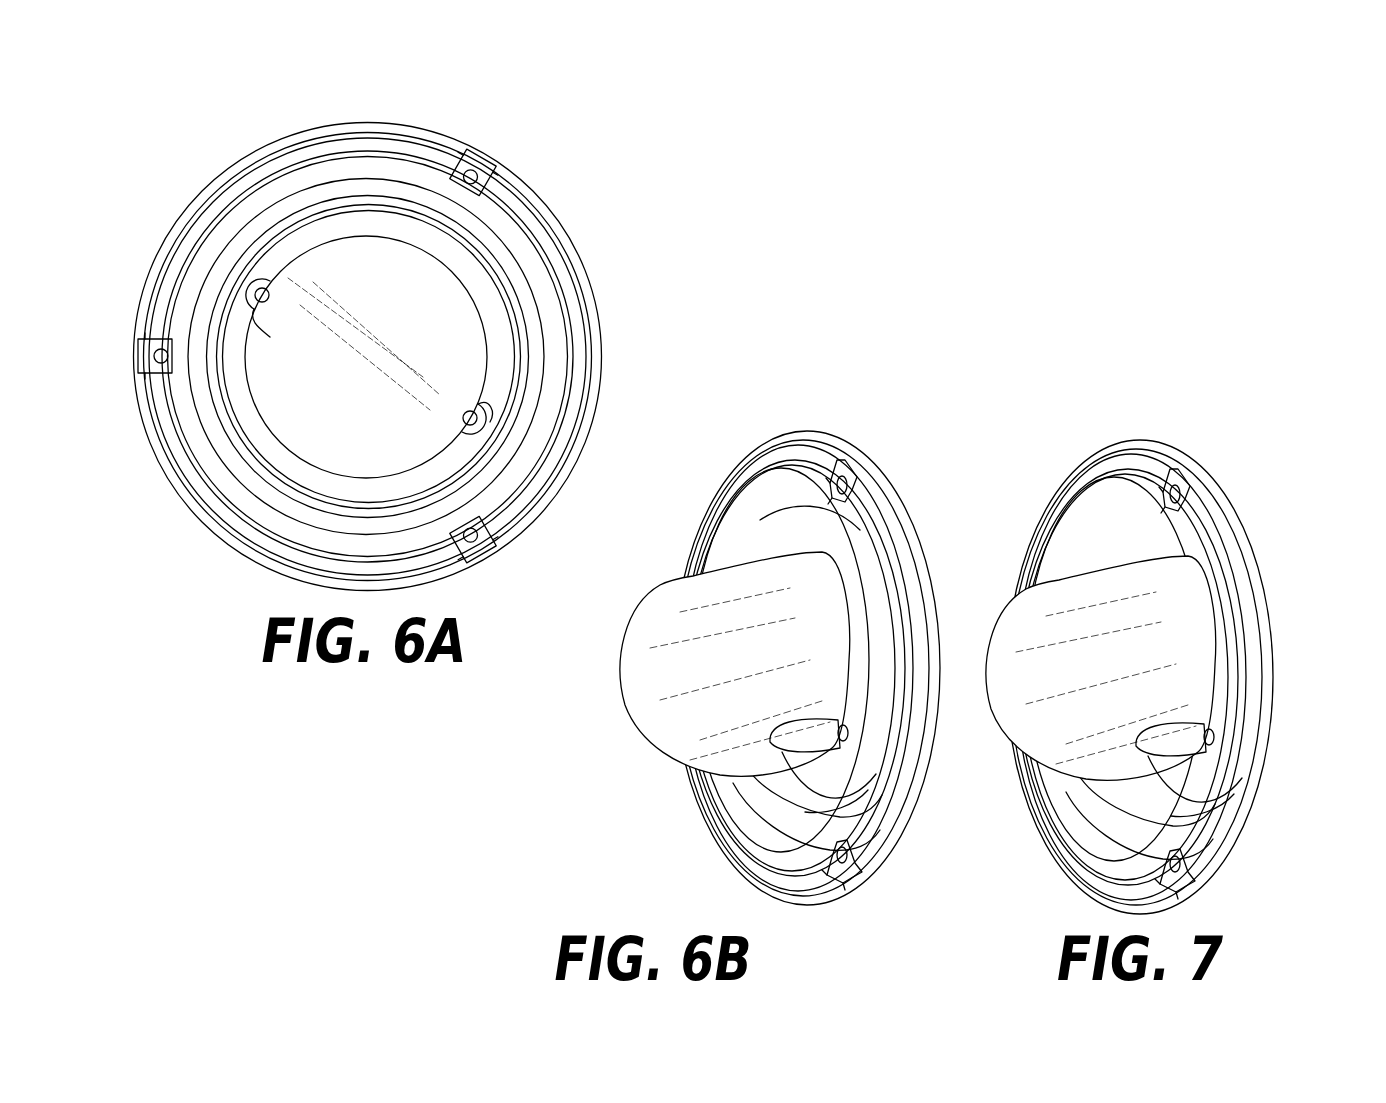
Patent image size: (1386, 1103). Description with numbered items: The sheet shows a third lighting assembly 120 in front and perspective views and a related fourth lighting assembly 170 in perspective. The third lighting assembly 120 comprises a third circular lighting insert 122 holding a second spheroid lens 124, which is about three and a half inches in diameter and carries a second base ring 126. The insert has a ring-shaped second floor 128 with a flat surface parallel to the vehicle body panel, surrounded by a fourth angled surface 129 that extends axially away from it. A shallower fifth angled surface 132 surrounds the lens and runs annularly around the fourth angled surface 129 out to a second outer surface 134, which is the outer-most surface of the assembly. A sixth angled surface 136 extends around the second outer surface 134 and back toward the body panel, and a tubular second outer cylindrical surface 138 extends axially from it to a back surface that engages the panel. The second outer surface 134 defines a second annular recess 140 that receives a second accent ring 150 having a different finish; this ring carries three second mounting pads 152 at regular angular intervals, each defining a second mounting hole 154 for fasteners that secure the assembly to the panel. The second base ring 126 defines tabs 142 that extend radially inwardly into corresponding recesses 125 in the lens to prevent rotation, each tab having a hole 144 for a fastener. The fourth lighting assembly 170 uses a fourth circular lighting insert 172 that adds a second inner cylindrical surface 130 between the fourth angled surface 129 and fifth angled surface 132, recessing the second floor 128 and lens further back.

In FIG. 6A, the third lighting assembly 120 is at (160, 170).
In FIG. 6B, the third lighting assembly 120 is at (747, 418).
In FIG. 6A, the third circular lighting insert 122 is at (530, 176).
In FIG. 6B, the third circular lighting insert 122 is at (873, 452).
In FIG. 6A, the second spheroid lens 124 is at (410, 300).
In FIG. 6B, the second spheroid lens 124 is at (682, 602).
In FIG. 7, the second spheroid lens 124 is at (1040, 645).
In FIG. 6A, the recesses 125 is at (480, 435).
In FIG. 6B, the recesses 125 is at (745, 762).
In FIG. 7, the recesses 125 is at (1115, 740).
In FIG. 6A, the second base ring 126 is at (490, 302).
In FIG. 6B, the second base ring 126 is at (816, 552).
In FIG. 6A, the second floor 128 is at (237, 289).
In FIG. 6B, the second floor 128 is at (862, 830).
In FIG. 6A, the fourth angled surface 129 is at (216, 310).
In FIG. 6B, the fourth angled surface 129 is at (790, 838).
In FIG. 7, the second inner cylindrical surface 130 is at (1133, 828).
In FIG. 6A, the fifth angled surface 132 is at (557, 326).
In FIG. 6B, the fifth angled surface 132 is at (727, 542).
In FIG. 7, the fifth angled surface 132 is at (1066, 537).
In FIG. 6A, the second outer surface 134 is at (592, 340).
In FIG. 6A, the sixth angled surface 136 is at (592, 396).
In FIG. 7, the sixth angled surface 136 is at (1168, 445).
In FIG. 6B, the second outer cylindrical surface 138 is at (918, 792).
In FIG. 7, the second outer cylindrical surface 138 is at (1228, 506).
In FIG. 6A, the second annular recess 140 is at (258, 172).
In FIG. 6B, the second annular recess 140 is at (728, 484).
In FIG. 7, the second annular recess 140 is at (1085, 472).
In FIG. 6A, the tabs 142 is at (262, 302).
In FIG. 6B, the tabs 142 is at (850, 733).
In FIG. 6A, the hole 144 is at (266, 288).
In FIG. 6B, the hole 144 is at (852, 742).
In FIG. 7, the hole 144 is at (1218, 741).
In FIG. 6A, the second accent ring 150 is at (432, 152).
In FIG. 6B, the second accent ring 150 is at (784, 448).
In FIG. 6A, the second mounting pads 152 is at (476, 168).
In FIG. 6B, the second mounting pads 152 is at (858, 876).
In FIG. 7, the second mounting pads 152 is at (1185, 875).
In FIG. 6A, the second mounting holes 154 is at (482, 163).
In FIG. 6B, the second mounting holes 154 is at (840, 880).
In FIG. 7, the second mounting holes 154 is at (1195, 866).
In FIG. 7, the fourth lighting assembly 170 is at (1094, 400).
In FIG. 7, the fourth circular lighting insert 172 is at (1213, 461).